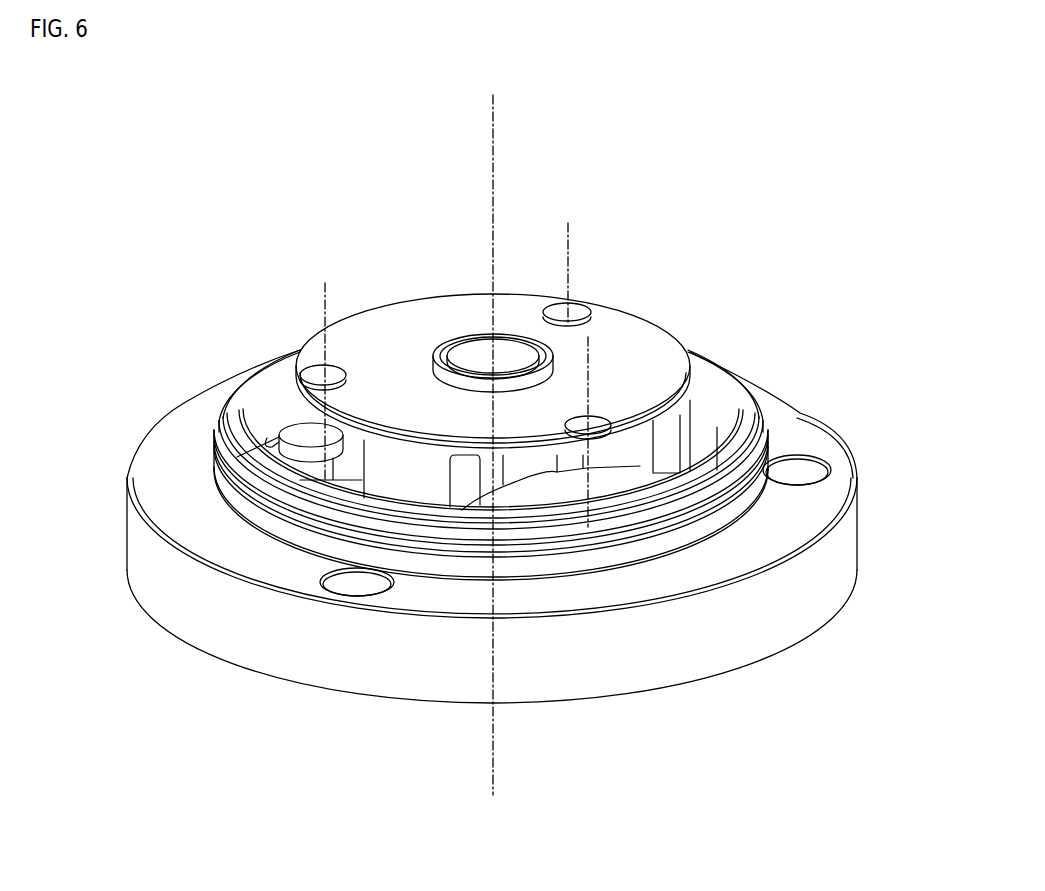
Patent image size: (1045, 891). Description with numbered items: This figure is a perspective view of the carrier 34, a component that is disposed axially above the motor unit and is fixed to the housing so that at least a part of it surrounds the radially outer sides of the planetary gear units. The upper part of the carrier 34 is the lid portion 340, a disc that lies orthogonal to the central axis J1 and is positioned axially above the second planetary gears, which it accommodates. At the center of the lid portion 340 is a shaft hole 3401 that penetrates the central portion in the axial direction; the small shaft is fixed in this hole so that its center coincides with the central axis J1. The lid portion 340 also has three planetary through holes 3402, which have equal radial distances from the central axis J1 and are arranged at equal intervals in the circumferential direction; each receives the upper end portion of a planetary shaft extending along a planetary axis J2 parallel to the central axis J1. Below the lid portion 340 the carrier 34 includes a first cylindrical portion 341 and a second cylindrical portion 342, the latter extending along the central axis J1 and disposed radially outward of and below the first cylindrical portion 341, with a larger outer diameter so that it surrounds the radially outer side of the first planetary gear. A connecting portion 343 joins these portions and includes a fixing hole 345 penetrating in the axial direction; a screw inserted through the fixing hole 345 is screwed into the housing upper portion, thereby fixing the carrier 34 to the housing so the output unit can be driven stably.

The carrier 34 is at (263, 242).
The lid portion 340 is at (390, 303).
The shaft hole 3401 is at (507, 358).
The planetary through holes 3402 is at (298, 370).
The first cylindrical portion 341 is at (223, 423).
The second cylindrical portion 342 is at (175, 600).
The connecting portion 343 is at (165, 487).
The fixing hole 345 is at (357, 590).
The central axis J1 is at (493, 108).
The planetary axis J2 is at (323, 310).